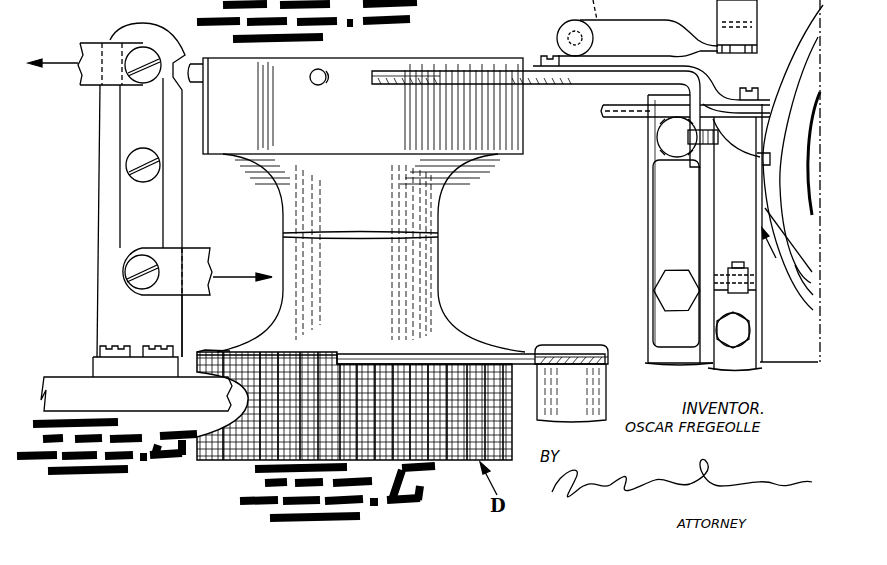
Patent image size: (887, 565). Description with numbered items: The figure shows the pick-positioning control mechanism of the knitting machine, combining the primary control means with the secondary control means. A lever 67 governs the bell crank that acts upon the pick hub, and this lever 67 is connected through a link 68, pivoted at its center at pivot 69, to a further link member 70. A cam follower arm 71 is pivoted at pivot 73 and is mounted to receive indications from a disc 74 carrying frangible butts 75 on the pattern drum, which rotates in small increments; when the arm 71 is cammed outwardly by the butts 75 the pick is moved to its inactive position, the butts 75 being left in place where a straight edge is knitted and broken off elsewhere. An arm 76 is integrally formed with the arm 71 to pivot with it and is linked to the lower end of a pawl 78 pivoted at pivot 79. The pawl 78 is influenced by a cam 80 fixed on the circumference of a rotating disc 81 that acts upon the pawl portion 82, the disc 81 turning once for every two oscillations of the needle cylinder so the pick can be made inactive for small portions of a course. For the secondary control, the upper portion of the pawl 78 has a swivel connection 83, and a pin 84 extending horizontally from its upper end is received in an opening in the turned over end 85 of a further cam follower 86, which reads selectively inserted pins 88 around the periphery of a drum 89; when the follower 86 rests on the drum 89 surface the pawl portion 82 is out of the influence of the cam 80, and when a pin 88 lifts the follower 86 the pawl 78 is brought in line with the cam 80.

In FIG. 5, the lever 67 is at (94, 52).
In FIG. 5, the link 68 is at (130, 120).
In FIG. 5, the pivot 69 is at (123, 180).
In FIG. 5, the link member 70 is at (195, 260).
In FIG. 6, the cam follower arm 71 is at (525, 355).
In FIG. 6, the pivot 73 is at (577, 345).
In FIG. 6, the disc 74 is at (244, 346).
In FIG. 6, the frangible butts 75 is at (321, 352).
In FIG. 6, the arm 76 is at (572, 364).
In FIG. 6, the pawl 78 is at (742, 370).
In FIG. 6, the pivot 79 is at (741, 335).
In FIG. 6, the cam 80 is at (802, 277).
In FIG. 6, the rotating disc 81 is at (807, 233).
In FIG. 6, the pawl portion 82 is at (780, 152).
In FIG. 6, the swivel connection 83 is at (738, 268).
In FIG. 6, the pin 84 is at (682, 137).
In FIG. 6, the turned over end 85 is at (694, 170).
In FIG. 6, the cam follower 86 is at (537, 88).
In FIG. 6, the pins 88 is at (318, 86).
In FIG. 6, the drum 89 is at (413, 65).